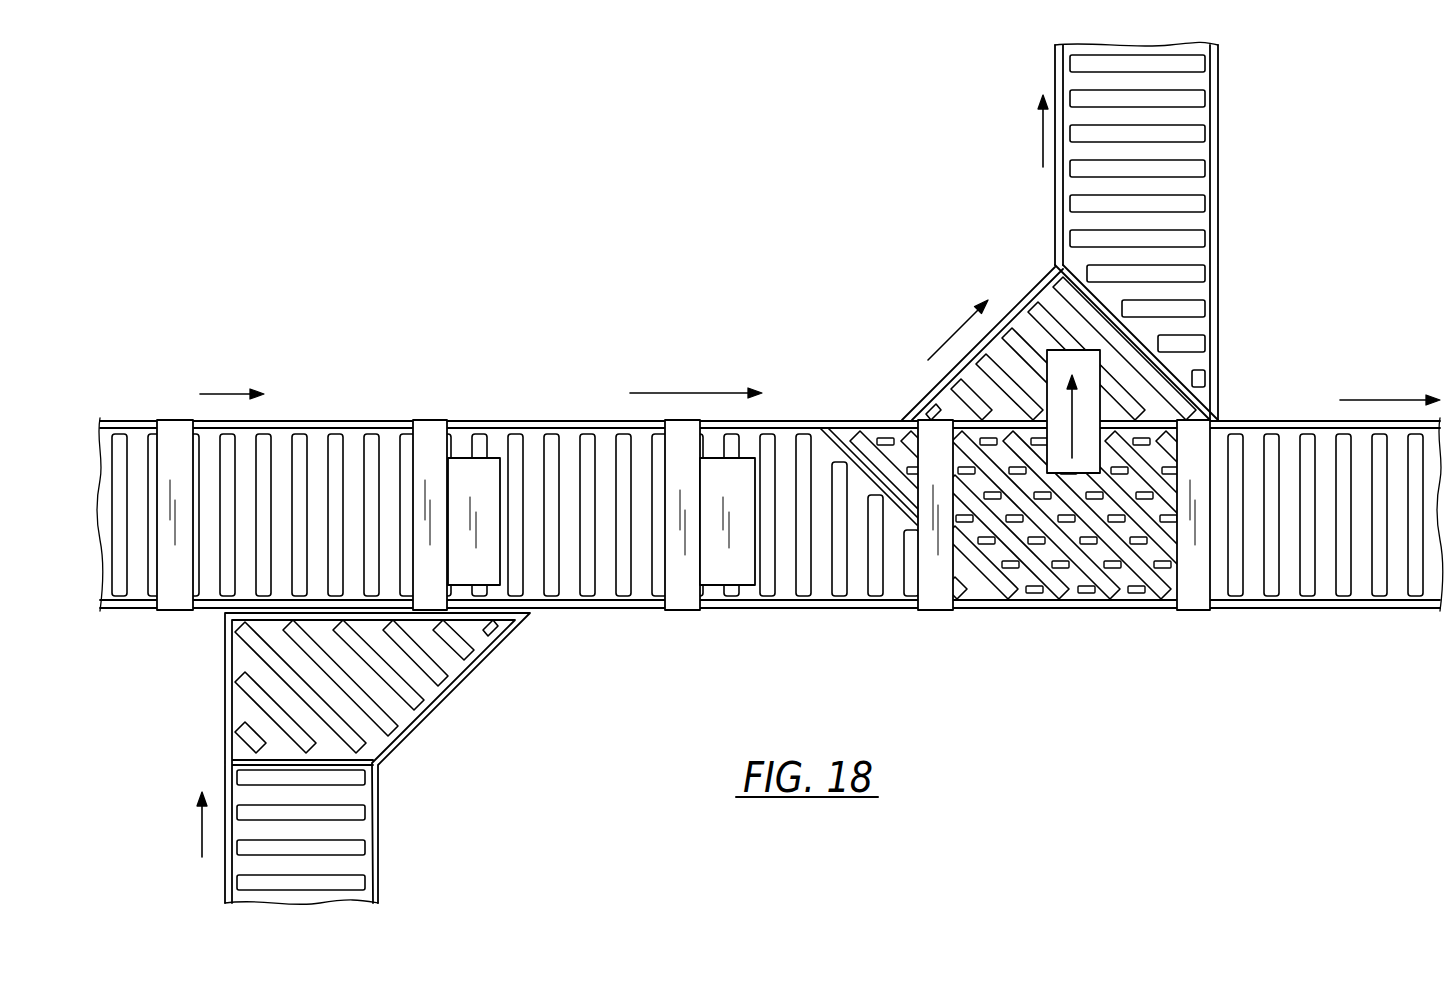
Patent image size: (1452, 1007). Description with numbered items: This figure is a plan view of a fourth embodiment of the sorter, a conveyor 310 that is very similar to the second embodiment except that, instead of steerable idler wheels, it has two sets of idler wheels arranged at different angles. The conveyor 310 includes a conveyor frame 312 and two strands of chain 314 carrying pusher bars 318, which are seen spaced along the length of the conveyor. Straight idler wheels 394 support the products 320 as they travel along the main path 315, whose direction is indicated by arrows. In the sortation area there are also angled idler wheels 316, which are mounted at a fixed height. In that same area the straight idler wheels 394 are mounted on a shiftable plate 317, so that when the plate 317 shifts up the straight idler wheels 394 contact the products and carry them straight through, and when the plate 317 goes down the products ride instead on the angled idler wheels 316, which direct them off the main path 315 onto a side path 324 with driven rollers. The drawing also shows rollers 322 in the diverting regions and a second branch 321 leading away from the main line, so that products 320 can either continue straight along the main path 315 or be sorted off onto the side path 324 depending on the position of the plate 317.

The conveyor 310 is at (901, 256).
The conveyor frame 312 is at (478, 423).
The strands of chain 314 is at (573, 406).
The main path 315 is at (205, 392).
The angled idler wheels 316 is at (1002, 600).
The shiftable plate 317 is at (1133, 602).
The pusher bars 318 is at (428, 422).
The packages 320 is at (492, 489).
The takeaway conveyor 321 is at (380, 833).
The diverter rollers 322 is at (1197, 93).
The side path 324 is at (1218, 148).
The straight idler wheels 394 is at (1090, 595).